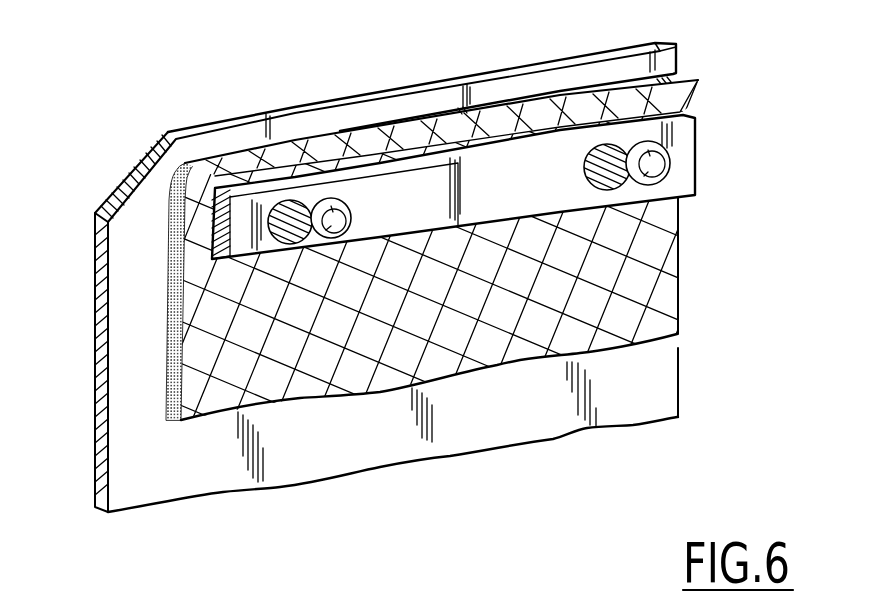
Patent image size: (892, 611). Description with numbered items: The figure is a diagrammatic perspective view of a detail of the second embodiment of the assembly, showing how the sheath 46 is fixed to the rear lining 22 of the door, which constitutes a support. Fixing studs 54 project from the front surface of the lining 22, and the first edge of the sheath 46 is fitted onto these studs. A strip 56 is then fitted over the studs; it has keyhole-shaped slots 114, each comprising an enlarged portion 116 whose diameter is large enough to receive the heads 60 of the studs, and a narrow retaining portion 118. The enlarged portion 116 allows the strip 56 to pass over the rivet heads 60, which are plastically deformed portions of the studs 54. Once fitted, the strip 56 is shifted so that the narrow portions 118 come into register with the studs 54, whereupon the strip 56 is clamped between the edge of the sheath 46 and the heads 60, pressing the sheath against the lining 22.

The rear lining 22 is at (605, 67).
The sheath 46 is at (684, 103).
The strip 56 is at (692, 142).
The fixing stud 54 is at (647, 186).
The rivet head 60 is at (342, 239).
The keyhole-shaped slot 114 is at (292, 199).
The enlarged portion 116 is at (250, 263).
The narrow retaining portion 118 is at (254, 258).